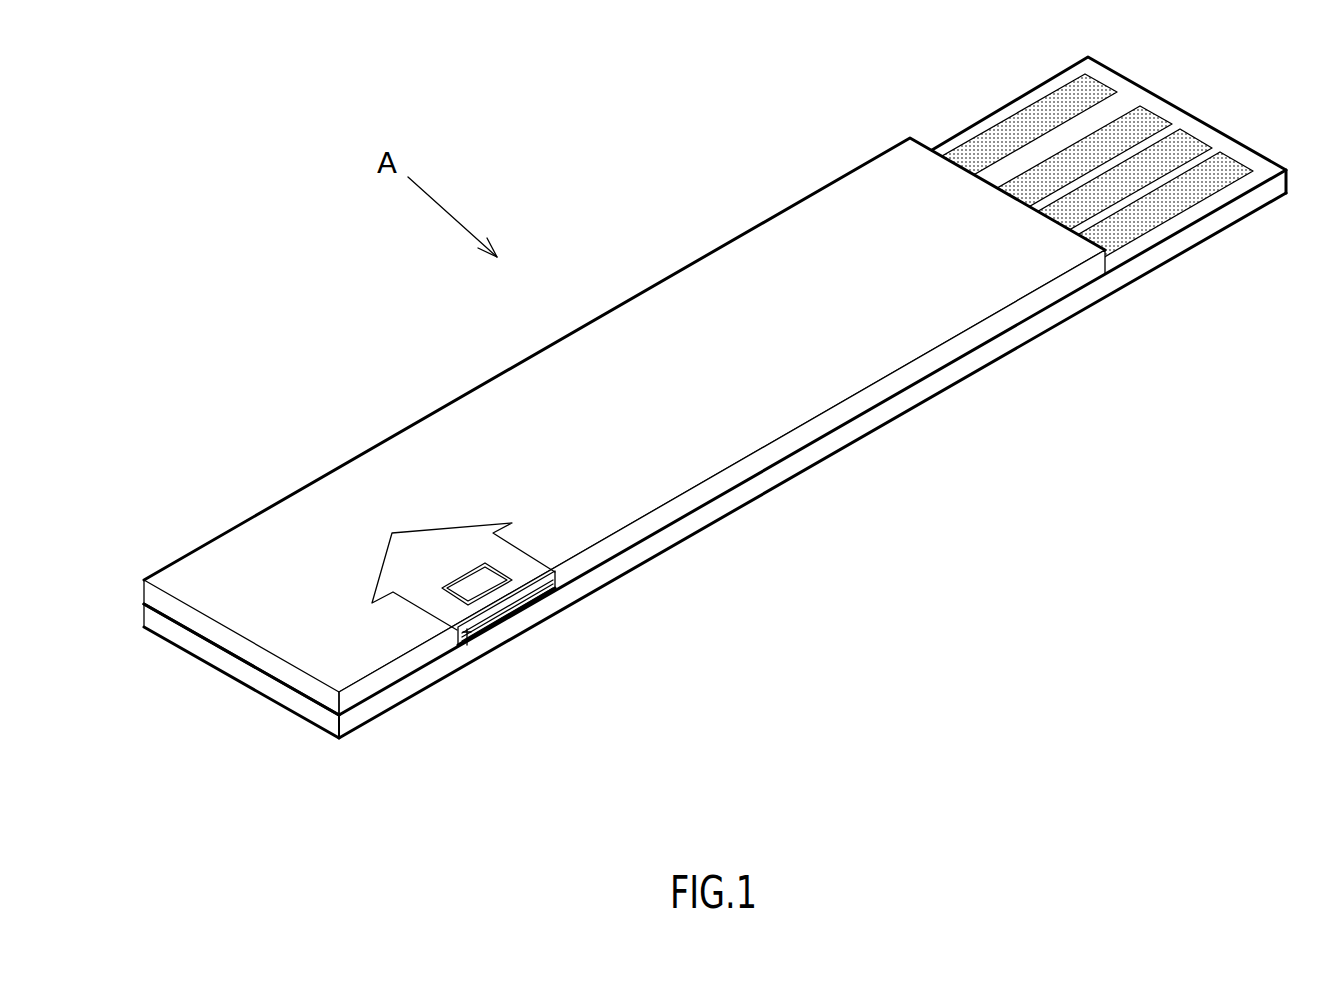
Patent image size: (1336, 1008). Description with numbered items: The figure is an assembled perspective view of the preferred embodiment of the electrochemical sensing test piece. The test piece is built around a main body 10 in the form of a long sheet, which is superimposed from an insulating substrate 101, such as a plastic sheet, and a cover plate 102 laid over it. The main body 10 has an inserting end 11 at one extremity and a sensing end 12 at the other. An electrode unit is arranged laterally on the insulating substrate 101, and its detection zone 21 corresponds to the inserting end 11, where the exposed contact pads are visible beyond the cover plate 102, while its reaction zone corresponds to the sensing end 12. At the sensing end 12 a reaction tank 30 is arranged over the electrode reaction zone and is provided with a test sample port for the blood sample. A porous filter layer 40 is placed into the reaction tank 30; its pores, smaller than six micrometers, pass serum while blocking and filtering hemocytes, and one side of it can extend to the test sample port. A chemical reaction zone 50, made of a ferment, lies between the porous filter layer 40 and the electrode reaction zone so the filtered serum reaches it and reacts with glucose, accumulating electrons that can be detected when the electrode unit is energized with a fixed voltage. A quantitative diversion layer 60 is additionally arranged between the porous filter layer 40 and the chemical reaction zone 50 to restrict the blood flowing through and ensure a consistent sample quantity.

The main body 10 is at (715, 438).
The insulating substrate 101 is at (840, 440).
The cover plate 102 is at (850, 407).
The inserting end 11 is at (1090, 174).
The detection zone 21 is at (1064, 183).
The sensing end 12 is at (218, 648).
The reaction tank 30 is at (465, 630).
The porous filter layer 40 is at (548, 596).
The chemical reaction zone 50 is at (503, 607).
The quantitative diversion layer 60 is at (528, 597).